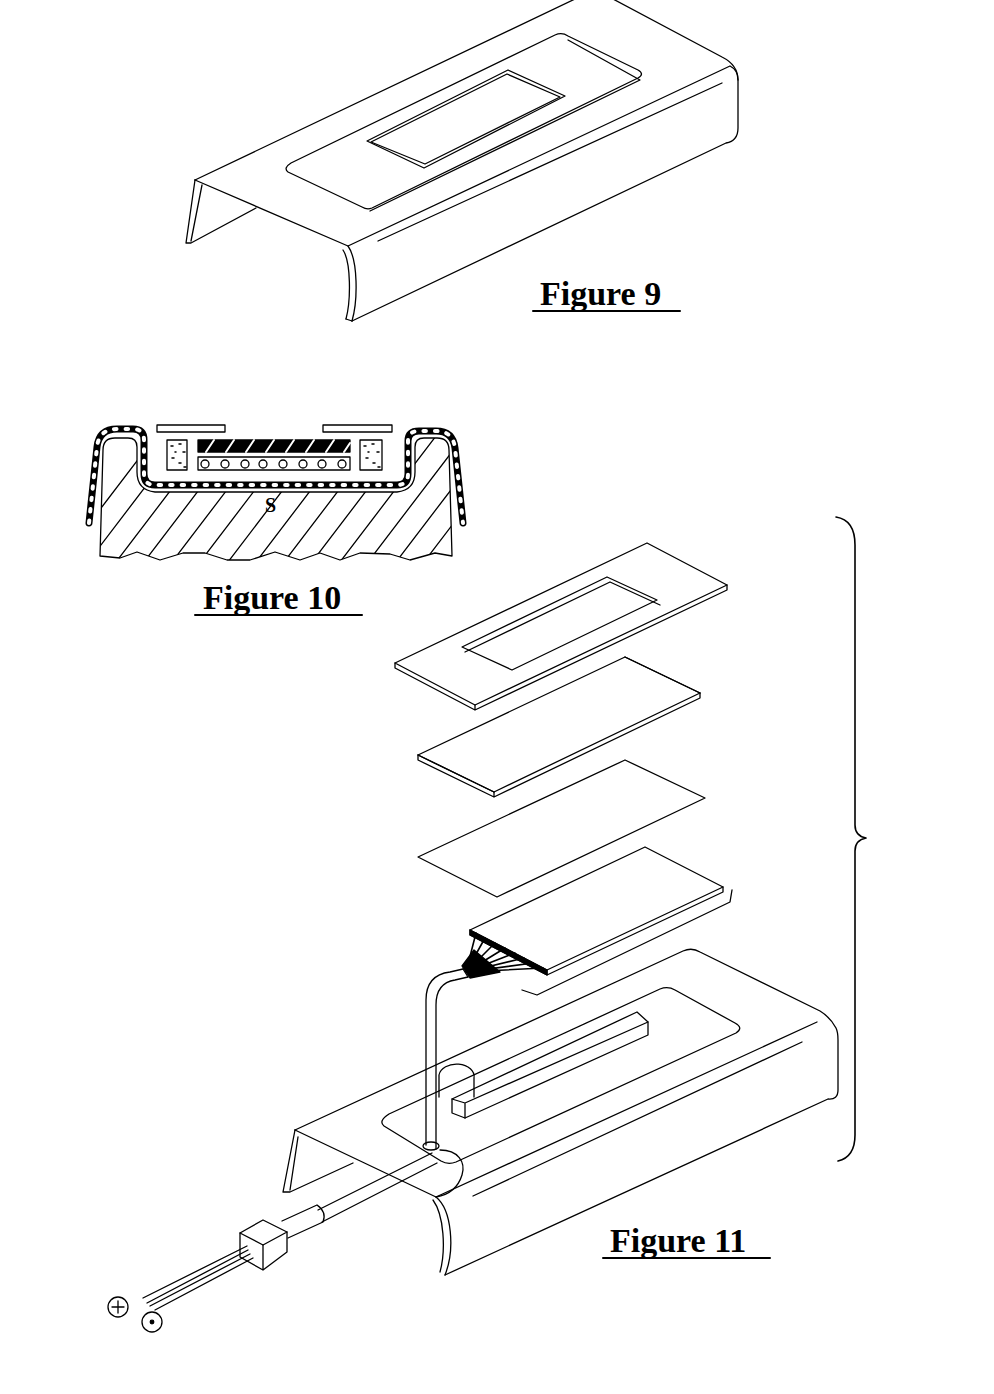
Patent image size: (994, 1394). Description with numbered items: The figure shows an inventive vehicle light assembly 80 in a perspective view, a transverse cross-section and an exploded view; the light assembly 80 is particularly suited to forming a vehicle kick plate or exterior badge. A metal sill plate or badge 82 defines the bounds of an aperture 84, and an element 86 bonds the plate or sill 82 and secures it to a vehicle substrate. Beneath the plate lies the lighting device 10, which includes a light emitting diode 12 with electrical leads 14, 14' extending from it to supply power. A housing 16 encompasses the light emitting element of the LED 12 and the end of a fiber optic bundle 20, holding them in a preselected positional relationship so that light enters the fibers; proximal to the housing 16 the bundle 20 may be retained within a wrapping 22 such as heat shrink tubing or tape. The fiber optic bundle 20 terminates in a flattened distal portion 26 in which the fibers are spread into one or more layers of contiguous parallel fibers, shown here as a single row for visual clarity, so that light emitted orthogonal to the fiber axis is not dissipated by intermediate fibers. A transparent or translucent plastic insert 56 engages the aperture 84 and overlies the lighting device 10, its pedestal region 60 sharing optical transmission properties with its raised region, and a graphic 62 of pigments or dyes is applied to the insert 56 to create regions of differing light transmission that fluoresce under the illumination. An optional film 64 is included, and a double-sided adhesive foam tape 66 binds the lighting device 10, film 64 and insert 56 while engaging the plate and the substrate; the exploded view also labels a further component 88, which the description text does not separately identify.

In FIG. 9, the lighting device 10 is at (385, 72).
In FIG. 11, the lighting device 10 is at (407, 981).
In FIG. 11, the light emitting diode 12 is at (277, 1253).
In FIG. 11, the electrical lead 14 is at (197, 1290).
In FIG. 11, the electrical lead 14' is at (103, 1266).
In FIG. 11, the housing 16 is at (293, 1223).
In FIG. 11, the fiber optic bundle 20 is at (462, 958).
In FIG. 11, the wrapping 22 is at (432, 1028).
In FIG. 11, the flattened distal portion 26 is at (640, 957).
In FIG. 11, the plastic insert 56 is at (667, 692).
In FIG. 11, the pedestal region 60 is at (681, 690).
In FIG. 11, the graphic 62 is at (510, 742).
In FIG. 11, the film 64 is at (572, 841).
In FIG. 10, the double-sided adhesive foam tape 66 is at (167, 450).
In FIG. 11, the double-sided adhesive foam tape 66 is at (440, 1064).
In FIG. 9, the vehicle light assembly 80 is at (254, 127).
In FIG. 11, the vehicle light assembly 80 is at (870, 839).
In FIG. 11, the sill plate or badge 82 is at (683, 594).
In FIG. 11, the aperture 84 is at (583, 610).
In FIG. 9, the bonding element 86 is at (384, 283).
In FIG. 11, the housing base 88 is at (685, 1040).